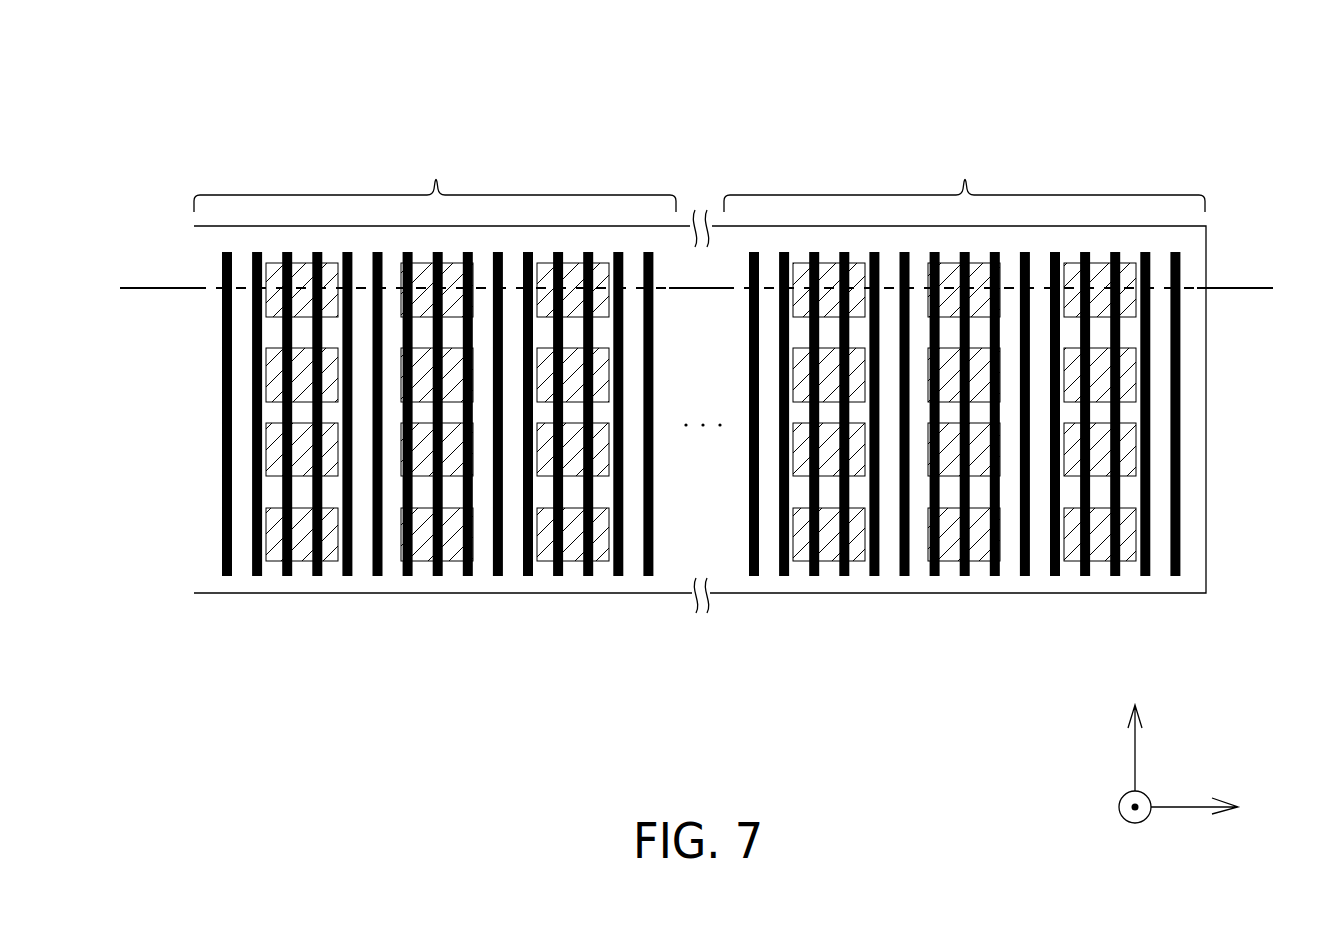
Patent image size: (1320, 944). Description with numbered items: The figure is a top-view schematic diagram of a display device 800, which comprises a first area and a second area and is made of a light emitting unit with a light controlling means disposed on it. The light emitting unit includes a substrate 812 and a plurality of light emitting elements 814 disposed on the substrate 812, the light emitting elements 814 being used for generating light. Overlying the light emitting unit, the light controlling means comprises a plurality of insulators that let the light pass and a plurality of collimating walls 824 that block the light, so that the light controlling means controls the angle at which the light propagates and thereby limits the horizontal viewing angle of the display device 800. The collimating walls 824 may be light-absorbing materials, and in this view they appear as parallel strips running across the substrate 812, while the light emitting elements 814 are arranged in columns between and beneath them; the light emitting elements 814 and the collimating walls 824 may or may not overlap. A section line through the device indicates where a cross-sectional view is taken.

The display device 800 is at (1138, 98).
The substrate 812 is at (207, 479).
The collimating walls 824 is at (226, 577).
The light emitting elements 814 is at (305, 547).